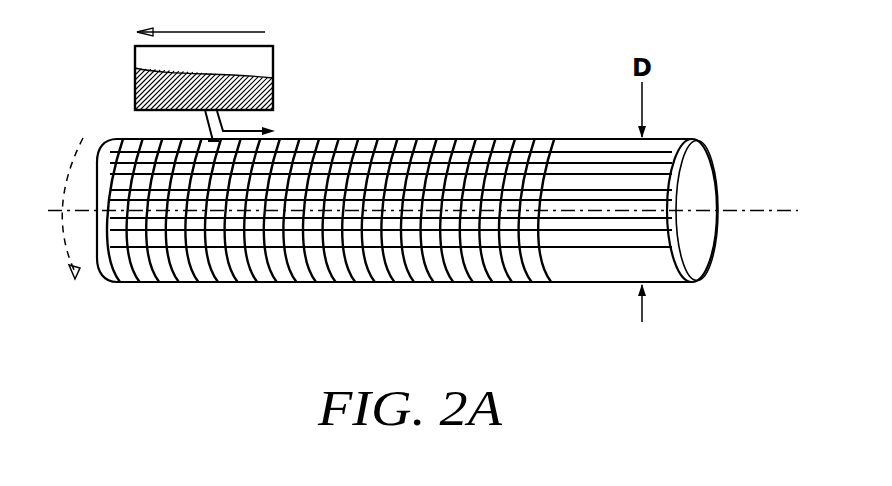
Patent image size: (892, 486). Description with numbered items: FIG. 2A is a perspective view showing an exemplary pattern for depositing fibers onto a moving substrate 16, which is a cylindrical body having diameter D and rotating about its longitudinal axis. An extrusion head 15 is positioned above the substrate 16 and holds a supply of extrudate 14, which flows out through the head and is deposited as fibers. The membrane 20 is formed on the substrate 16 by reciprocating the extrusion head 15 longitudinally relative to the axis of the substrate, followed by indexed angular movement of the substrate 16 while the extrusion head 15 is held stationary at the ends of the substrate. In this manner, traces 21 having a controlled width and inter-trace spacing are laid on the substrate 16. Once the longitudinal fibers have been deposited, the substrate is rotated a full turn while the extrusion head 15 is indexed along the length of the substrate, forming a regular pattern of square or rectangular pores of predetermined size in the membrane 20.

The extrudate 14 is at (266, 88).
The extrusion head 15 is at (135, 66).
The substrate 16 is at (695, 240).
The membrane 20 is at (293, 279).
The traces 21 is at (341, 133).